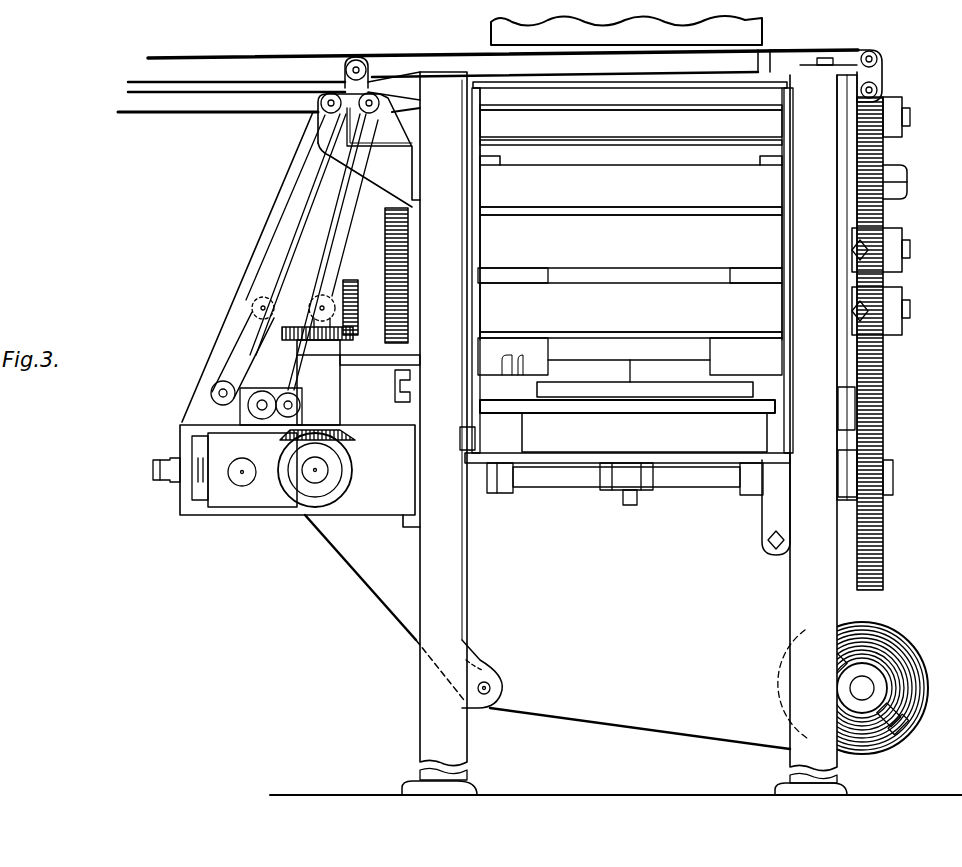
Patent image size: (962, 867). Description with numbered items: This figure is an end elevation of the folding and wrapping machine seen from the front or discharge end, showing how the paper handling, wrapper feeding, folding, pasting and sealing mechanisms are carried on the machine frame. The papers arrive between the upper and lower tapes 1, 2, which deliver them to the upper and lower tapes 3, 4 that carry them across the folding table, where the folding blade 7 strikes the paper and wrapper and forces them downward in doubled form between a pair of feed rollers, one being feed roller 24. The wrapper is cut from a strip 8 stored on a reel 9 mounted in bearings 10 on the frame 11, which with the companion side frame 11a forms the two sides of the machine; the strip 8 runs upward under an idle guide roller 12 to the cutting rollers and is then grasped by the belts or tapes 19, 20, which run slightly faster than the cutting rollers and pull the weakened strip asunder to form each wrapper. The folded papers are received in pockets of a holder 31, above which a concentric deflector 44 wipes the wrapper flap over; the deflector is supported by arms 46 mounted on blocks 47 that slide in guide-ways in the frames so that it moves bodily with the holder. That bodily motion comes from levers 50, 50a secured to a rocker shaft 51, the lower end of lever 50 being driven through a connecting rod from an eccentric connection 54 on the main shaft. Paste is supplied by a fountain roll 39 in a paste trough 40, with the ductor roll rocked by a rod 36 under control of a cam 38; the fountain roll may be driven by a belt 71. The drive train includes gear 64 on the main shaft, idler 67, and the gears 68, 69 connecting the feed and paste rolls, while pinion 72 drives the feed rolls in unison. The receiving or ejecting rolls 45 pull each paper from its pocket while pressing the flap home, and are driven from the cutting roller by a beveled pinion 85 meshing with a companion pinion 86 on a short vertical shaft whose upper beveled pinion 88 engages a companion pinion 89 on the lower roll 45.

The upper tape 1 is at (216, 113).
The lower tape 2 is at (216, 58).
The upper tapes 3 is at (418, 57).
The lower tapes 4 is at (380, 85).
The folding blade 7 is at (722, 37).
The wrapper strip 8 is at (608, 725).
The reel 9 is at (865, 682).
The bearings 10 is at (895, 670).
The frame 11 is at (789, 614).
The side frame 11a is at (450, 604).
The idle guide roller 12 is at (503, 682).
The belt or tape 19 is at (298, 172).
The belt or tape 20 is at (328, 198).
The feed roller 24 is at (631, 125).
The holder 31 is at (536, 277).
The rod 36 is at (617, 497).
The cam 38 is at (640, 487).
The fountain roll 39 is at (620, 393).
The paste fountain or trough 40 is at (627, 438).
The deflector 44 is at (631, 186).
The receiving or ejecting rolls 45 is at (631, 272).
The arms 46 is at (501, 161).
The blocks 47 is at (395, 335).
The lever 50 is at (784, 446).
The lever 50a is at (470, 383).
The rocker shaft 51 is at (560, 404).
The eccentric connection 54 is at (780, 510).
The gear 64 is at (874, 572).
The idler gear 67 is at (900, 184).
The gear 68 is at (880, 252).
The gear 69 is at (880, 324).
The belt 71 is at (495, 482).
The pinion 72 is at (892, 143).
The beveled pinion 85 is at (302, 498).
The companion pinion 86 is at (346, 440).
The beveled pinion 88 is at (290, 326).
The companion pinion 89 is at (347, 287).